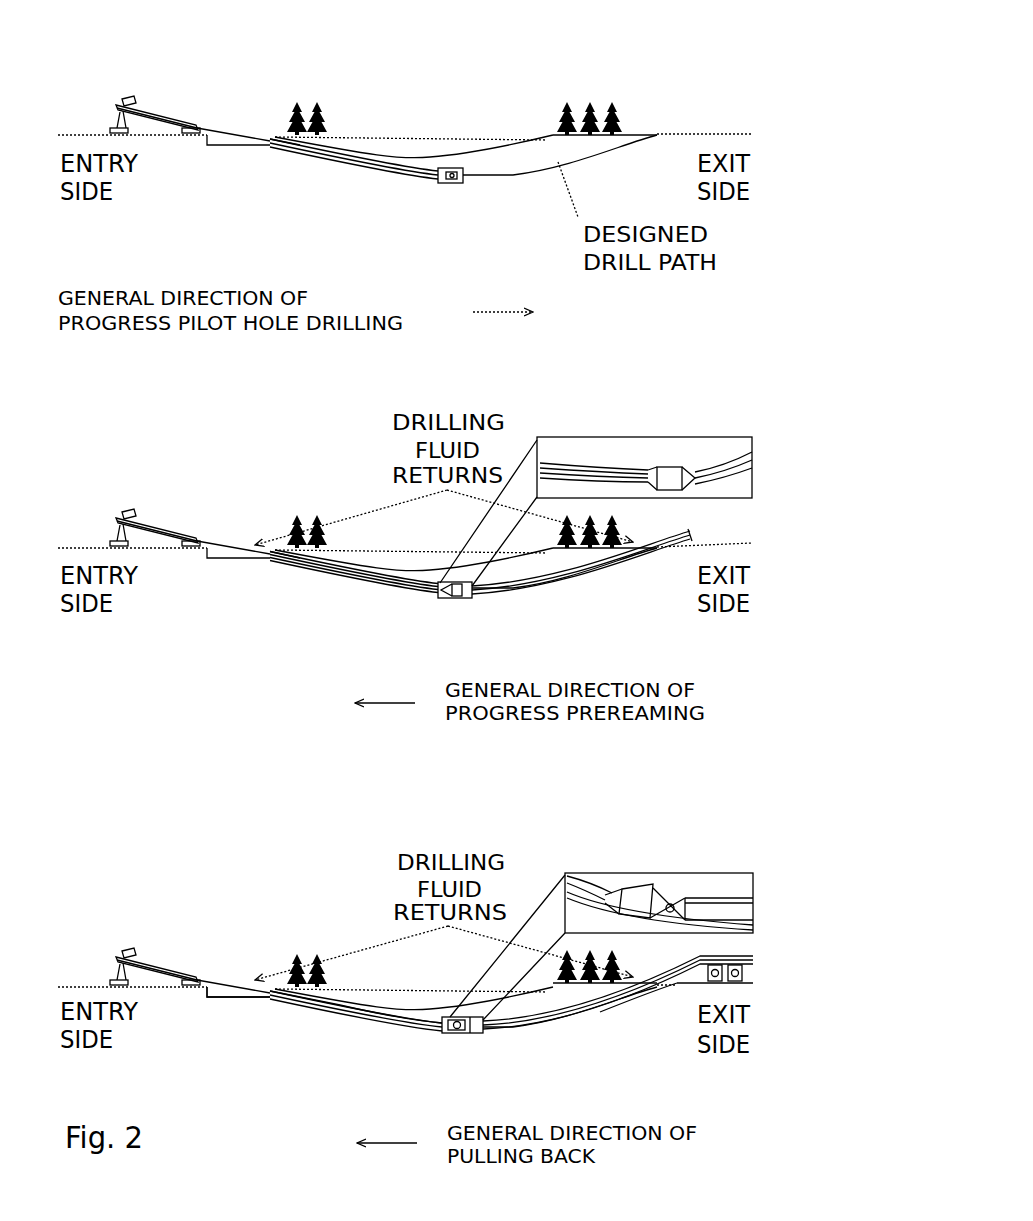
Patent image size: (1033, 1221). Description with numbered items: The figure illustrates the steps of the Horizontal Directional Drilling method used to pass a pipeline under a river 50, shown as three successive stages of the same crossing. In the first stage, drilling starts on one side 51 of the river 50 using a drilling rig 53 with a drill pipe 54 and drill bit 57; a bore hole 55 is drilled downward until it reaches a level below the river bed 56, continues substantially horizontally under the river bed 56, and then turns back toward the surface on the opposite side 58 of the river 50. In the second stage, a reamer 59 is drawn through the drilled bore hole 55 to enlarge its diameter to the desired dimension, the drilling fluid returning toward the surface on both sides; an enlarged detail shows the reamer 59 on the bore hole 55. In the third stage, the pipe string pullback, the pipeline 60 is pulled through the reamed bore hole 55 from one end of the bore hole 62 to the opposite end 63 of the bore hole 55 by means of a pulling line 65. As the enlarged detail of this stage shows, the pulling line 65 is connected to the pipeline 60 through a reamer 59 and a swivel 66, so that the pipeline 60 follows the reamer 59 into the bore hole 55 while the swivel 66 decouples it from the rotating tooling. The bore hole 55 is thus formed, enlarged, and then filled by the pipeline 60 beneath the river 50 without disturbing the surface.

The river 50 is at (402, 150).
The one side of the river 51 is at (270, 125).
The drilling rig 53 is at (133, 103).
The drill pipe 54 is at (217, 128).
The bore hole 55 is at (387, 183).
The river bed 56 is at (463, 157).
The drill bit 57 is at (450, 180).
The opposite side of the river 58 is at (683, 130).
The reamer 59 is at (673, 468).
The pipeline 60 is at (710, 905).
The one end of the bore hole 62 is at (638, 993).
The opposite end of the bore hole 63 is at (277, 995).
The pulling line 65 is at (373, 1013).
The swivel 66 is at (672, 905).